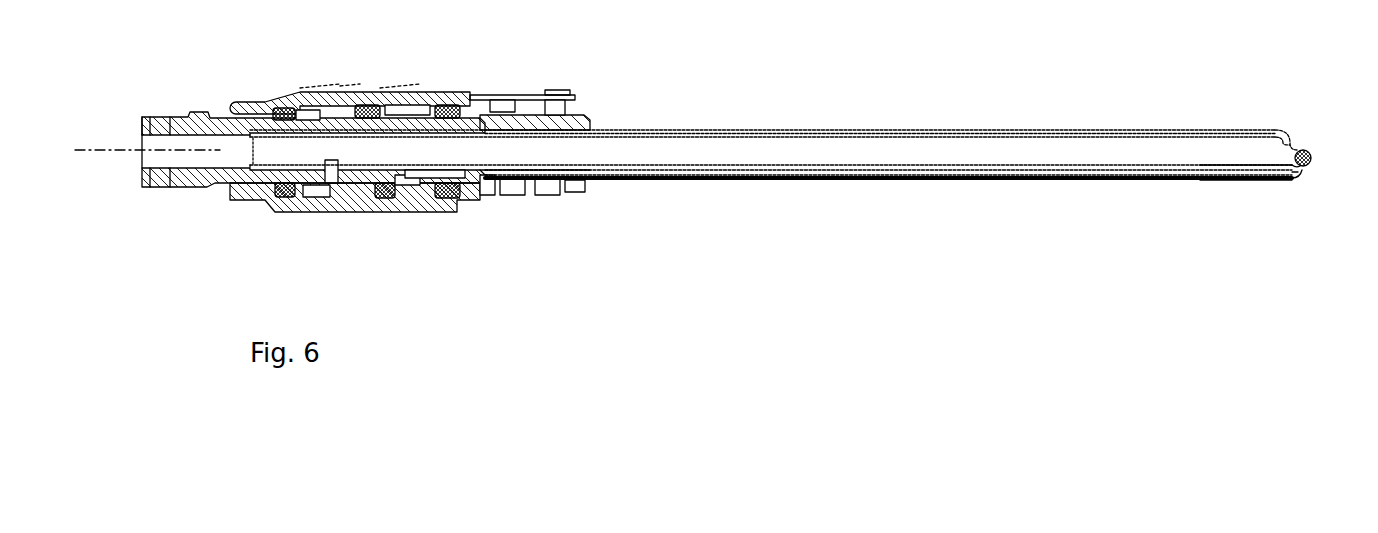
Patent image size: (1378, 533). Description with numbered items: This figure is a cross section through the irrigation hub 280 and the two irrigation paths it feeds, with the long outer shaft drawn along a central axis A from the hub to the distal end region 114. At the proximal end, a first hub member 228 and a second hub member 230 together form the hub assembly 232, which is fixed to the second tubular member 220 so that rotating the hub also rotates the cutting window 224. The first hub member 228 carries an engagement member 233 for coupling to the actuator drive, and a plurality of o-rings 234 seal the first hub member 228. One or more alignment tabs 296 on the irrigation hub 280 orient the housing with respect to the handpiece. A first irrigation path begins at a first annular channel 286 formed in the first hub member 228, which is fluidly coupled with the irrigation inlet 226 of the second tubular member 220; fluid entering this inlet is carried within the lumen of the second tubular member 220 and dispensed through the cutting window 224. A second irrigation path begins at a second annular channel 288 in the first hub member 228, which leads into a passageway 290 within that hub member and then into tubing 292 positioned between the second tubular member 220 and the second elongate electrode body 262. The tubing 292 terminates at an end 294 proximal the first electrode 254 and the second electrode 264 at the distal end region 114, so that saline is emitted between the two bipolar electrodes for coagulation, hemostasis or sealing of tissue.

The longitudinal axis A is at (123, 152).
The distal end region 114 is at (1257, 111).
The second tubular member 220 is at (252, 153).
The cutting window 224 is at (1297, 156).
The irrigation inlet 226 is at (330, 157).
The first hub member 228 is at (216, 124).
The second hub member 230 is at (579, 117).
The hub assembly 232 is at (177, 106).
The engagement member 233 is at (197, 192).
The o-rings 234 is at (367, 109).
The first electrode 254 is at (1284, 132).
The second elongate electrode body 262 is at (930, 179).
The second electrode 264 is at (1309, 167).
The irrigation hub 280 is at (279, 208).
The first annular channel 286 is at (331, 188).
The second annular channel 288 is at (401, 186).
The passageway 290 is at (426, 179).
The tubing 292 is at (591, 181).
The end 294 is at (1262, 181).
The alignment tabs 296 is at (243, 101).